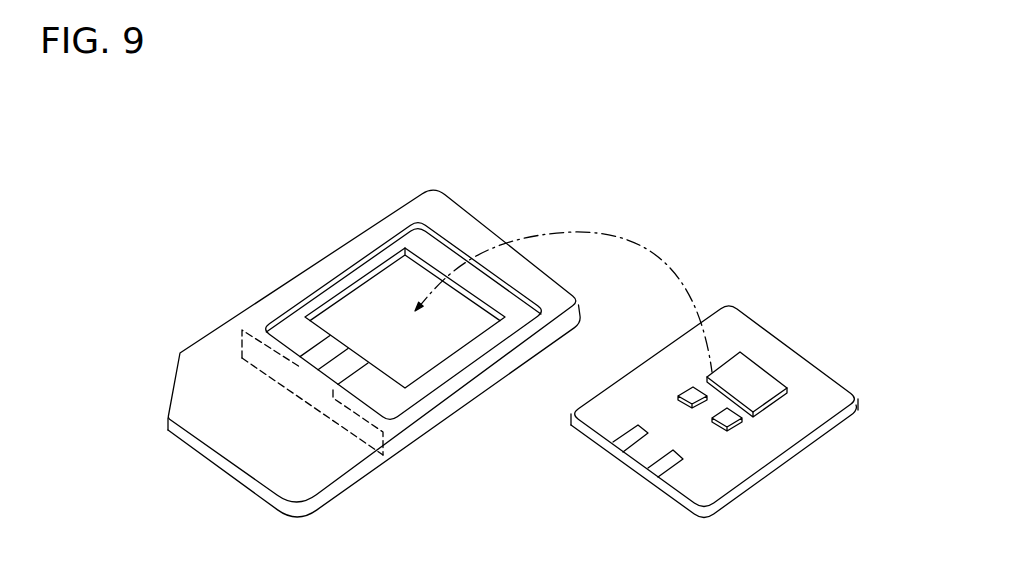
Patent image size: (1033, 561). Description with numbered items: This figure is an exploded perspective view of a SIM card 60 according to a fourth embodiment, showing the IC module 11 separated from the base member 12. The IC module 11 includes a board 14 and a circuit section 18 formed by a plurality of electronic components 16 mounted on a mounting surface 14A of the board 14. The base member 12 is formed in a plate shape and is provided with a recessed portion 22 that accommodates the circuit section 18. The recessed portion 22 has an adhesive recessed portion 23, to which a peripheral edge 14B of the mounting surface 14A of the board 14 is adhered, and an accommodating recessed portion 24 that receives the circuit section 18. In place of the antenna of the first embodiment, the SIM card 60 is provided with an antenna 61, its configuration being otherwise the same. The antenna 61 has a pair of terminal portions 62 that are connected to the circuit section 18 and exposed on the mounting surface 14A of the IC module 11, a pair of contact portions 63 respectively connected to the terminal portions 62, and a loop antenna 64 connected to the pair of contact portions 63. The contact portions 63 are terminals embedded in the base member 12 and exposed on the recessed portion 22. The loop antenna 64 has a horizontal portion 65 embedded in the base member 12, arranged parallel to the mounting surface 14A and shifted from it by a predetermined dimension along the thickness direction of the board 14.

The IC module 11 is at (686, 396).
The base member 12 is at (327, 254).
The board 14 is at (686, 411).
The mounting surface 14A is at (812, 398).
The peripheral edge 14B is at (622, 392).
The electronic component 16 is at (753, 382).
The circuit section 18 is at (757, 413).
The recessed portion 22 is at (404, 246).
The adhesive recessed portion 23 is at (423, 247).
The accommodating recessed portion 24 is at (457, 290).
The SIM card 60 is at (656, 189).
The antenna 61 is at (304, 429).
The terminal portions 62 is at (627, 443).
The contact portions 63 is at (368, 372).
The loop antenna 64 is at (273, 382).
The horizontal portion 65 is at (353, 437).